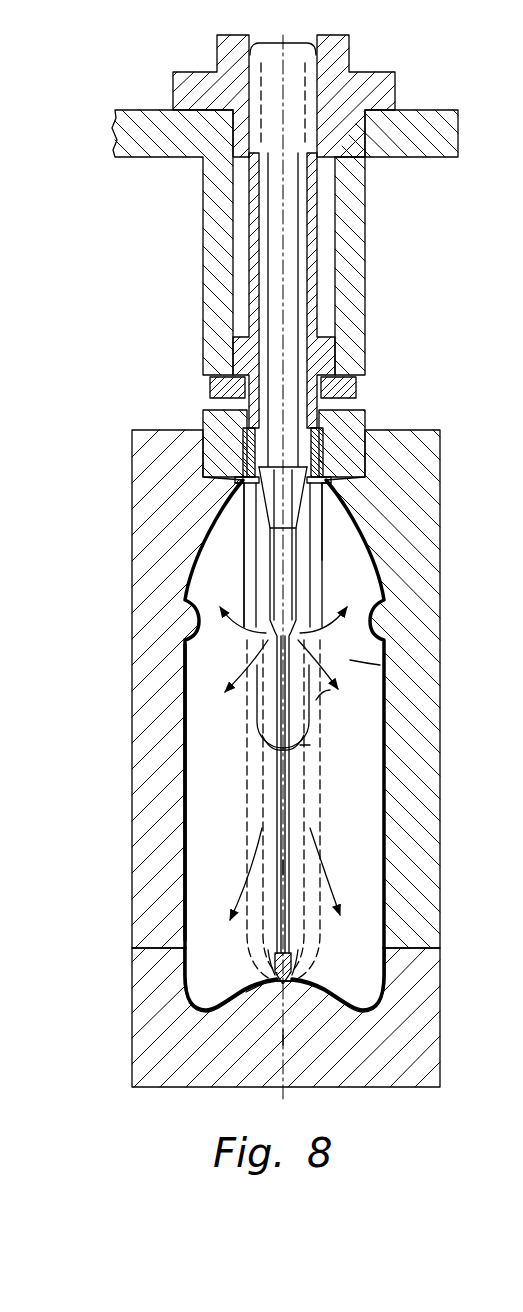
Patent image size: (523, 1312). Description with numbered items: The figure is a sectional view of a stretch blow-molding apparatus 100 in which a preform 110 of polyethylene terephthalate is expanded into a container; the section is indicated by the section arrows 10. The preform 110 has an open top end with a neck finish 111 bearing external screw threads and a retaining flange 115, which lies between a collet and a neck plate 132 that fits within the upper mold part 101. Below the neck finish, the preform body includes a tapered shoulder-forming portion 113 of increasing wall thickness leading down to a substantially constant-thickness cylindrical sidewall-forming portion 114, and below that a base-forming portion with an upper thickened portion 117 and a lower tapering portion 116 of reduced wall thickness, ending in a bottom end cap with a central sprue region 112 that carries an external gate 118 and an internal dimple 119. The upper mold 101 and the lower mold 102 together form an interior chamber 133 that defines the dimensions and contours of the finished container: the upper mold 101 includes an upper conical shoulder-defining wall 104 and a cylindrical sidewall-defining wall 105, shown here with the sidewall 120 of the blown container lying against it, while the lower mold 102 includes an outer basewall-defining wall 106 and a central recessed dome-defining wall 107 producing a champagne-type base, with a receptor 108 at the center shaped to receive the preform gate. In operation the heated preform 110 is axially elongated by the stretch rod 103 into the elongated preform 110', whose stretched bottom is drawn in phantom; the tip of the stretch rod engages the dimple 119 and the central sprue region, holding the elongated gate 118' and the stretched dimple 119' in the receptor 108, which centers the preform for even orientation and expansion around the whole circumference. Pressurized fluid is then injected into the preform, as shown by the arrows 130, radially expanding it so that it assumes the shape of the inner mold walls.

The section line / viewing direction 10 is at (289, 867).
The stretch blow-molding apparatus 100 is at (434, 316).
The upper mold part 101 is at (130, 451).
The lower mold 102 is at (130, 1013).
The stretch rod 103 is at (297, 820).
The upper conical shoulder-defining wall 104 is at (326, 535).
The cylindrical sidewall-defining wall 105 is at (388, 764).
The outer basewall-defining wall 106 is at (380, 1000).
The central recessed dome-defining wall 107 is at (247, 995).
The receptor 108 is at (285, 986).
The preform 110 is at (159, 555).
The elongated preform 110' is at (191, 810).
The neck finish 111 is at (342, 458).
The central sprue region 112 is at (286, 742).
The tapered shoulder-forming portion 113 is at (346, 493).
The cylindrical sidewall-forming portion 114 is at (330, 565).
The retaining flange 115 is at (340, 493).
The lower tapering portion 116 is at (316, 700).
The upper thickened portion 117 is at (300, 745).
The external gate 118 is at (252, 761).
The preform gate 118' is at (329, 969).
The internal dimple 119 is at (244, 729).
The stretched preform bottom inner surface 119' is at (239, 962).
The container side wall 120 is at (183, 745).
The arrows 130 is at (244, 634).
The neck plate 132 is at (203, 420).
The interior chamber 133 is at (368, 663).